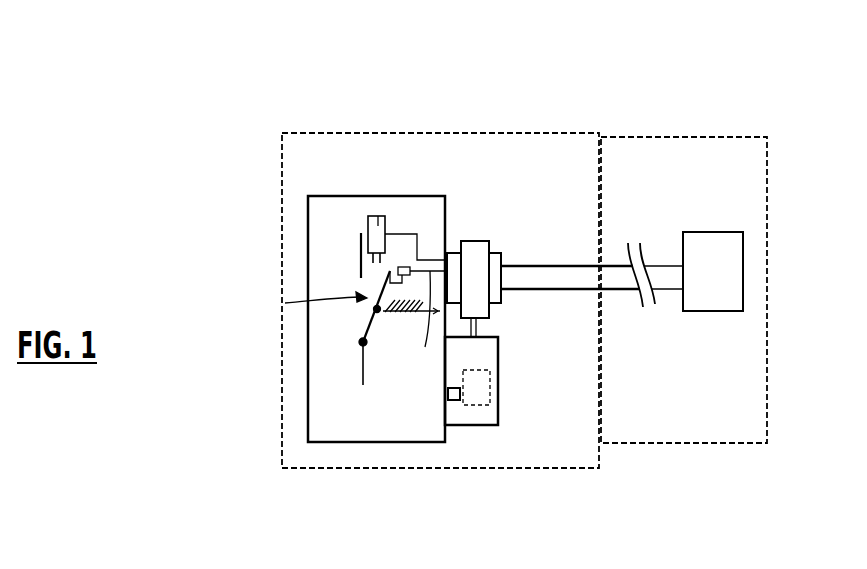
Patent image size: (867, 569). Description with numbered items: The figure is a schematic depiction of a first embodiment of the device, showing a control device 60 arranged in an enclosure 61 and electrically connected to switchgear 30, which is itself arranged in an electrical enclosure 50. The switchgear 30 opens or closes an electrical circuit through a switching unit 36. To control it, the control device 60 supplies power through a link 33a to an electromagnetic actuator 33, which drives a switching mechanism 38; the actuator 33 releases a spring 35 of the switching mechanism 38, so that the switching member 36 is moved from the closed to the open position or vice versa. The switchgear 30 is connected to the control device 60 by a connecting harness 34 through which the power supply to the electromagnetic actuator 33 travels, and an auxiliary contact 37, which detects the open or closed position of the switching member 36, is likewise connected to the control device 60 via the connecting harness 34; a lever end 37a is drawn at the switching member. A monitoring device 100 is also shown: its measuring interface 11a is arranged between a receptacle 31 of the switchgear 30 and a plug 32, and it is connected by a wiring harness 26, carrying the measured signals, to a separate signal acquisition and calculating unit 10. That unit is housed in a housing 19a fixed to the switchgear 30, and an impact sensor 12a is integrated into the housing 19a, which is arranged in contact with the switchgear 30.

The signal acquisition and calculating unit 10 is at (482, 425).
The measuring interface 11a is at (473, 241).
The impact sensor 12a is at (473, 405).
The housing 19a is at (455, 402).
The wiring harness 26 is at (480, 322).
The switchgear 30 is at (323, 233).
The receptacle 31 is at (446, 262).
The plug 32 is at (510, 258).
The electromagnetic actuator 33 is at (378, 216).
The link 33a is at (423, 271).
The connecting harness 34 is at (527, 279).
The spring 35 is at (392, 316).
The switching unit 36 is at (375, 311).
The auxiliary contact 37 is at (404, 267).
The lever contact 37a is at (405, 343).
The switching mechanism 38 is at (285, 303).
The electrical enclosure 50 is at (310, 133).
The control device 60 is at (708, 232).
The enclosure 61 is at (680, 137).
The monitoring device 100 is at (574, 320).